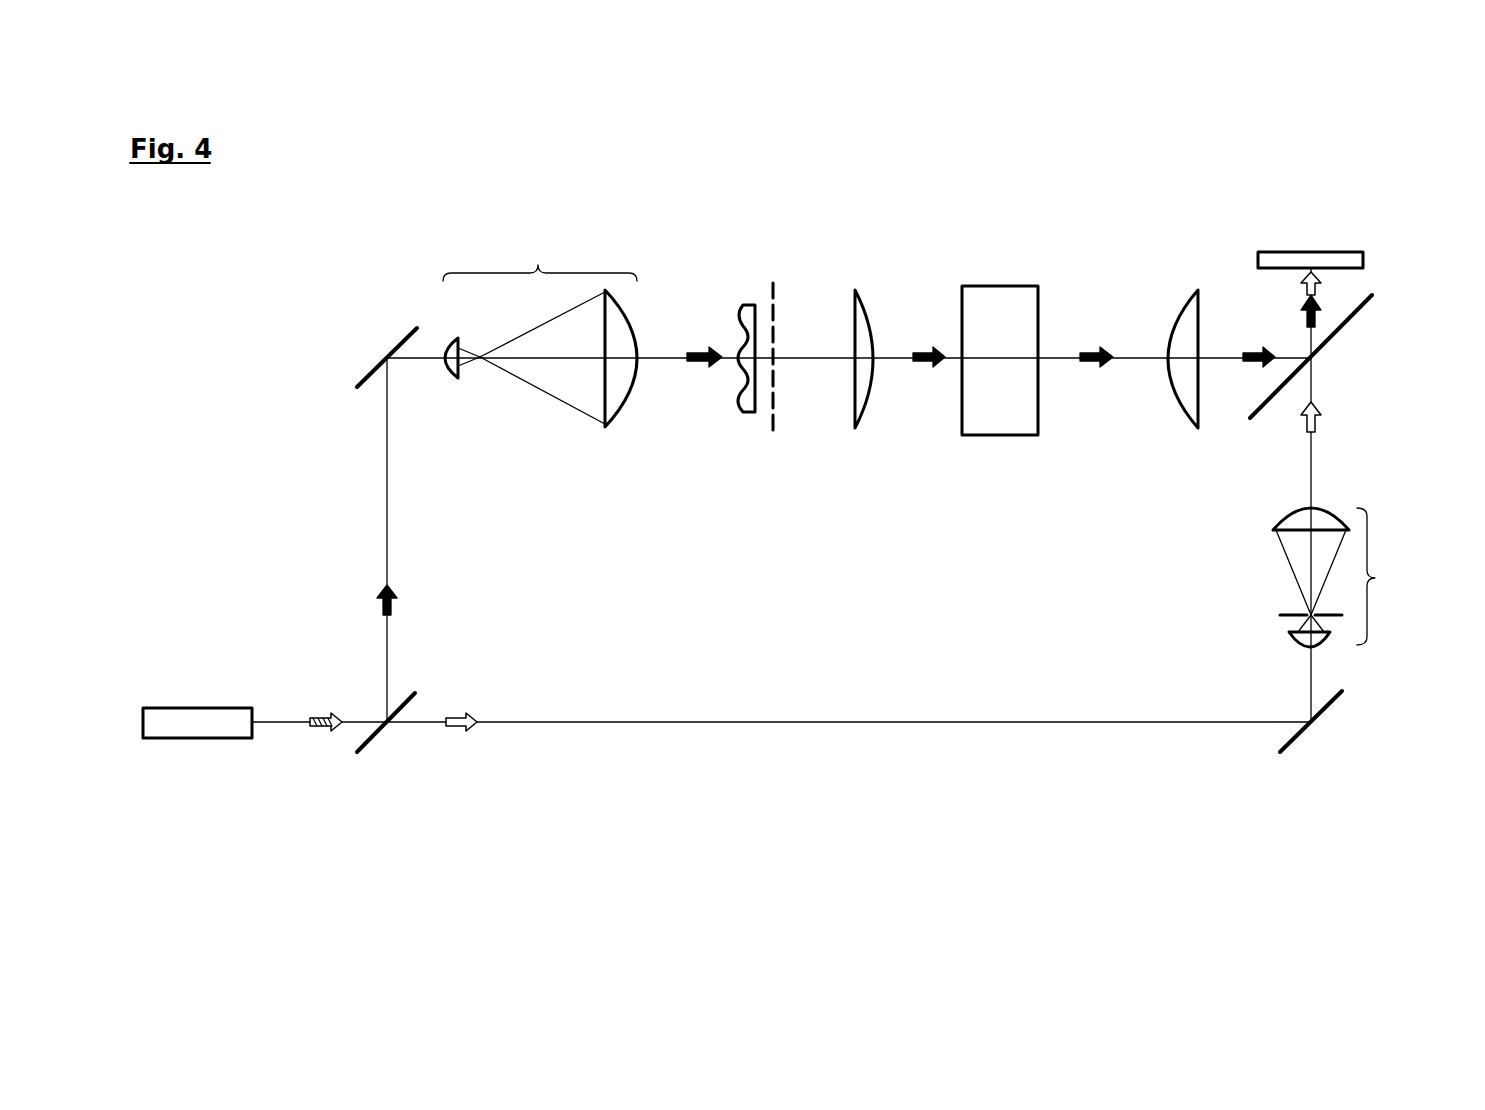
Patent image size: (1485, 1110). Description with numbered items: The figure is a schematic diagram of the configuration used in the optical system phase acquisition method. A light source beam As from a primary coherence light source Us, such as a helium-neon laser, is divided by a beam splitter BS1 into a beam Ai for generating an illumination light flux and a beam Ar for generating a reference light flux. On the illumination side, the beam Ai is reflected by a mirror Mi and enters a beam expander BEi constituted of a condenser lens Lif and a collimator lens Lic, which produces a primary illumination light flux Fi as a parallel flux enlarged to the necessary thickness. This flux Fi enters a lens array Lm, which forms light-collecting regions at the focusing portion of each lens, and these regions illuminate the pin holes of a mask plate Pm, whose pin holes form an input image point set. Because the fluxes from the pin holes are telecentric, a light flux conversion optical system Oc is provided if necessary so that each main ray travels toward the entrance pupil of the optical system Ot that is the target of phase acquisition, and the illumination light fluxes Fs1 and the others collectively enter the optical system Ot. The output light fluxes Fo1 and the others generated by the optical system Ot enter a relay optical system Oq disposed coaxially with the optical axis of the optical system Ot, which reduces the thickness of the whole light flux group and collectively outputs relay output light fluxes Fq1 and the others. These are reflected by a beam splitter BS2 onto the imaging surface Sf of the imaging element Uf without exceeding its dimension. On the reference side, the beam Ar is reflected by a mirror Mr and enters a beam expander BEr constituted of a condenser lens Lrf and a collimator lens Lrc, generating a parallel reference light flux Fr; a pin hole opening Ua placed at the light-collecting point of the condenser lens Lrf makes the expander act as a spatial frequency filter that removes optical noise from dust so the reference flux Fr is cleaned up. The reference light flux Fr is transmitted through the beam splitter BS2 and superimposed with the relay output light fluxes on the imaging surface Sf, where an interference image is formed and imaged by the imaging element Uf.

The primary coherence light source Us is at (228, 728).
The light source beam As is at (288, 725).
The beam splitter for beam division BS1 is at (363, 748).
The beam for generating a reference light flux Ar is at (526, 725).
The beam for generating an illumination light flux Ai is at (387, 535).
The mirror Mi is at (362, 372).
The beam expander BEi is at (534, 353).
The condenser lens Lif is at (456, 382).
The collimator lens Lic is at (610, 418).
The primary illumination light flux Fi is at (672, 355).
The lens array Lm is at (748, 412).
The mask plate Pm is at (773, 433).
The light flux conversion optical system Oc is at (862, 428).
The illumination light flux Fs1 is at (897, 355).
The optical system Ot is at (993, 425).
The output light flux Fo1 is at (1067, 355).
The relay optical system Oq is at (1178, 418).
The relay output light flux Fq1 is at (1223, 355).
The beam splitter BS2 is at (1365, 300).
The imaging surface Sf is at (1342, 268).
The imaging element Uf is at (1318, 258).
The reference light flux Fr is at (1312, 446).
The beam expander BEr is at (1323, 583).
The collimator lens Lrc is at (1292, 523).
The pin hole opening Ua is at (1282, 613).
The condenser lens Lrf is at (1297, 640).
The mirror Mr is at (1290, 755).